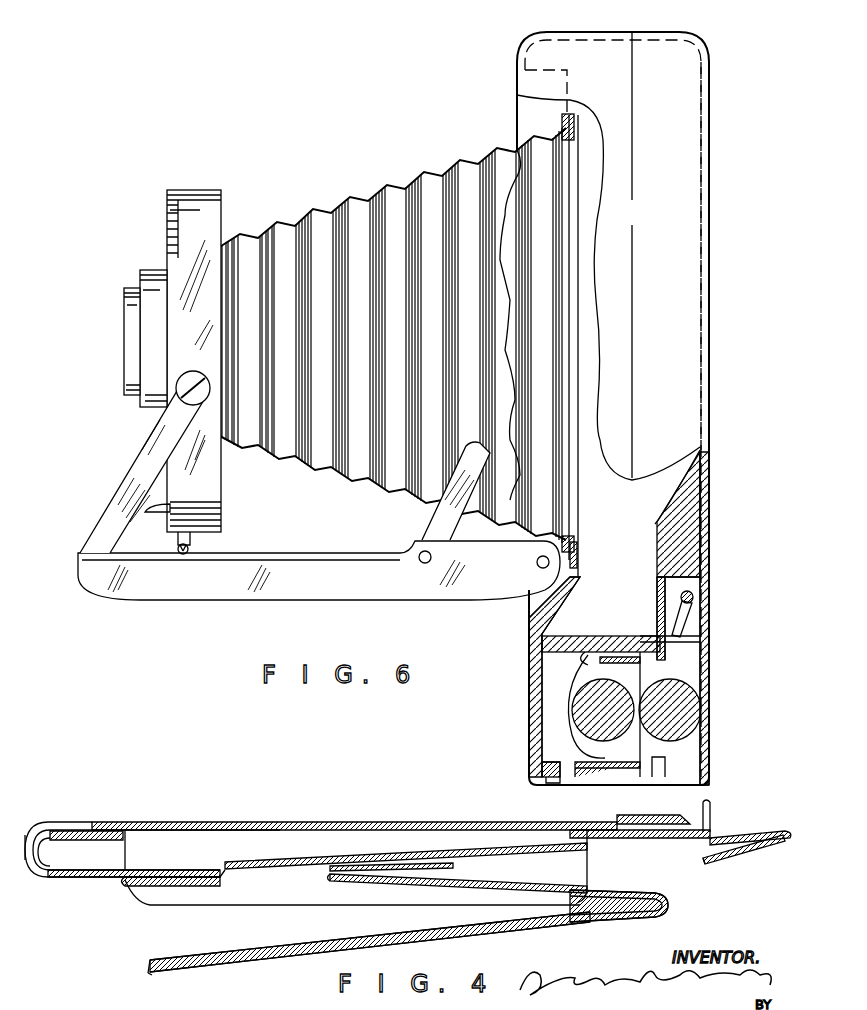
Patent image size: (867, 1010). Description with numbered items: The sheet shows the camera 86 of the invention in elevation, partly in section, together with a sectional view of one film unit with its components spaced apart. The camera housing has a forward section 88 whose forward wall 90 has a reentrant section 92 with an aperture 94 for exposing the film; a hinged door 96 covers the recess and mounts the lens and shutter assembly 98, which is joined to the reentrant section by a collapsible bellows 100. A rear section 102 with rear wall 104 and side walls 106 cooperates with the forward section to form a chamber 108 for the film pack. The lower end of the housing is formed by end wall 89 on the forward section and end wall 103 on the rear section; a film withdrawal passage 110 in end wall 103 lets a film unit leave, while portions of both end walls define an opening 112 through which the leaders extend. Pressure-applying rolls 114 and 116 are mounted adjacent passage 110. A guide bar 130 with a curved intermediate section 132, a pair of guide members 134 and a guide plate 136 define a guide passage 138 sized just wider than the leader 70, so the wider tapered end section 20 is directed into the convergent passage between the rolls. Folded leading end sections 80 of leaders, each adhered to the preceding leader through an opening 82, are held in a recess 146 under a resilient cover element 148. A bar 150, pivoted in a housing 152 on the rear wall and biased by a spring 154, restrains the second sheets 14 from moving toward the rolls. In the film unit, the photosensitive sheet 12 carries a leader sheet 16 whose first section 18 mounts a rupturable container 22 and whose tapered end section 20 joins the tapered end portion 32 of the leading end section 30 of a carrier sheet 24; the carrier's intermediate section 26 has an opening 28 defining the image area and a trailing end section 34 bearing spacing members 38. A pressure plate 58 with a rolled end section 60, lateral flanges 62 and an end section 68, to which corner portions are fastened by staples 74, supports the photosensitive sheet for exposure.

In FIG. 4, the photosensitive sheet 12 is at (195, 822).
In FIG. 4, the second sheet 14 is at (192, 968).
In FIG. 4, the leader sheet 16 is at (44, 820).
In FIG. 4, the first section 18 is at (60, 833).
In FIG. 4, the tapered end section 20 is at (372, 862).
In FIG. 4, the rupturable container 22 is at (142, 895).
In FIG. 4, the carrier sheet 24 is at (665, 893).
In FIG. 4, the intermediate section 26 is at (286, 948).
In FIG. 4, the opening 28 is at (232, 952).
In FIG. 4, the leading end section 30 is at (513, 882).
In FIG. 4, the tapered end portion 32 is at (346, 880).
In FIG. 4, the trailing end section 34 is at (172, 958).
In FIG. 4, the spacing members 38 is at (163, 975).
In FIG. 4, the pressure plate 58 is at (268, 832).
In FIG. 4, the rolled end section 60 is at (45, 850).
In FIG. 4, the lateral flanges 62 is at (290, 897).
In FIG. 4, the end section 68 is at (635, 840).
In FIG. 4, the leader 70 is at (470, 850).
In FIG. 4, the staples 74 is at (710, 805).
In FIG. 4, the leading end section 80 is at (718, 860).
In FIG. 4, the opening 82 is at (735, 838).
In FIG. 6, the camera 86 is at (479, 117).
In FIG. 6, the forward section 88 is at (524, 30).
In FIG. 4, the forward section 88 is at (712, 852).
In FIG. 6, the end wall 89 is at (535, 743).
In FIG. 6, the forward wall 90 is at (517, 70).
In FIG. 6, the reentrant section 92 is at (580, 554).
In FIG. 6, the aperture 94 is at (578, 500).
In FIG. 6, the hinged door 96 is at (322, 597).
In FIG. 6, the lens and shutter assembly 98 is at (187, 190).
In FIG. 6, the collapsible bellows 100 is at (322, 208).
In FIG. 6, the rear section 102 is at (721, 164).
In FIG. 6, the end wall 103 is at (714, 782).
In FIG. 6, the rear wall 104 is at (707, 310).
In FIG. 6, the side walls 106 is at (650, 224).
In FIG. 6, the chamber 108 is at (682, 455).
In FIG. 6, the film withdrawal passage 110 is at (655, 780).
In FIG. 6, the opening 112 is at (556, 752).
In FIG. 6, the pressure-applying roll 114 is at (581, 702).
In FIG. 6, the pressure-applying roll 116 is at (692, 700).
In FIG. 6, the guide bar 130 is at (572, 648).
In FIG. 6, the intermediate section 132 is at (578, 678).
In FIG. 6, the guide members 134 is at (690, 636).
In FIG. 6, the guide plate 136 is at (613, 630).
In FIG. 6, the guide passage 138 is at (600, 637).
In FIG. 6, the recess 146 is at (600, 786).
In FIG. 6, the resilient cover element 148 is at (562, 786).
In FIG. 6, the bar 150 is at (682, 612).
In FIG. 6, the housing 152 is at (694, 518).
In FIG. 6, the spring 154 is at (697, 592).